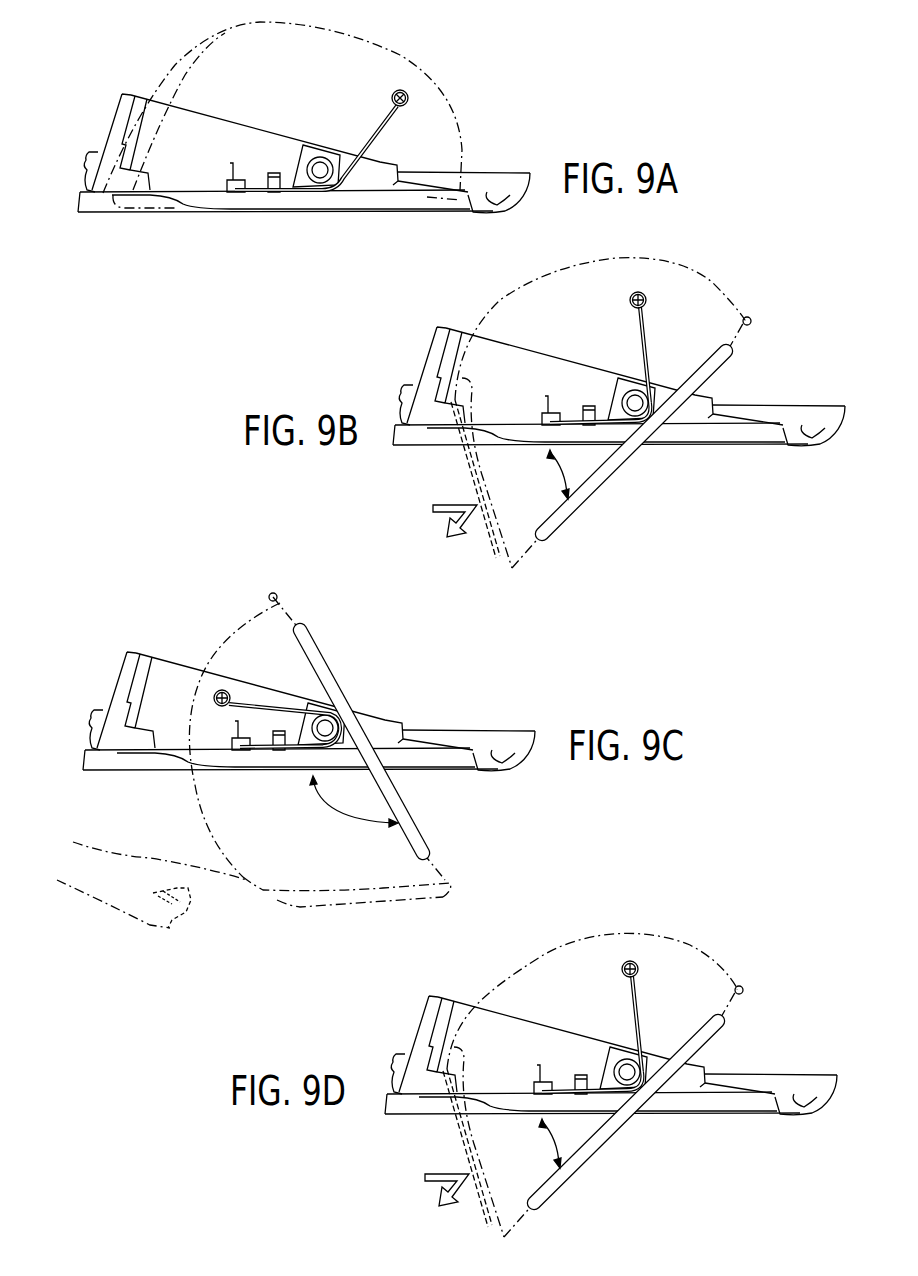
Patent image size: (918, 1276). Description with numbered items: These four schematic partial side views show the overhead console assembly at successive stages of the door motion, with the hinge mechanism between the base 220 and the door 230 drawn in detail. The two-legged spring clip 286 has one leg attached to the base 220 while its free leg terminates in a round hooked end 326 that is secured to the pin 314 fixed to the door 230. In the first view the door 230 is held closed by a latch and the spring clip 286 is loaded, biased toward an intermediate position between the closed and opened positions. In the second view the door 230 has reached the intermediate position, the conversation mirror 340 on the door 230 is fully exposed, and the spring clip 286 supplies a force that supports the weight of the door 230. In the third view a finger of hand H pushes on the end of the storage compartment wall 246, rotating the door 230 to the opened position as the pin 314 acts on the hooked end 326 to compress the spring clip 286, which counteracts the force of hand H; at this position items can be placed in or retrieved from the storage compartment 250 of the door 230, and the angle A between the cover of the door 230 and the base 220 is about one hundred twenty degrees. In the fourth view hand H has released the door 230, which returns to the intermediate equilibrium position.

In FIG. 9A, the base 220 is at (493, 155).
In FIG. 9B, the base 220 is at (777, 390).
In FIG. 9C, the base 220 is at (517, 713).
In FIG. 9D, the base 220 is at (778, 1065).
In FIG. 9A, the door 230 is at (382, 222).
In FIG. 9B, the door 230 is at (632, 483).
In FIG. 9C, the door 230 is at (347, 670).
In FIG. 9D, the door 230 is at (615, 1160).
In FIG. 9A, the spring clip 286 is at (376, 113).
In FIG. 9B, the spring clip 286 is at (634, 333).
In FIG. 9C, the spring clip 286 is at (253, 707).
In FIG. 9A, the pin 314 is at (407, 95).
In FIG. 9B, the pin 314 is at (647, 302).
In FIG. 9A, the hooked end 326 is at (398, 91).
In FIG. 9B, the hooked end 326 is at (645, 292).
In FIG. 9B, the conversation mirror 340 is at (497, 552).
In FIG. 9C, the storage compartment wall 246 is at (277, 900).
In FIG. 9C, the storage compartment 250 is at (317, 890).
In FIG. 9B, the angle A is at (551, 474).
In FIG. 9C, the angle A is at (354, 812).
In FIG. 9D, the angle A is at (543, 1143).
In FIG. 9C, the hand H is at (148, 856).